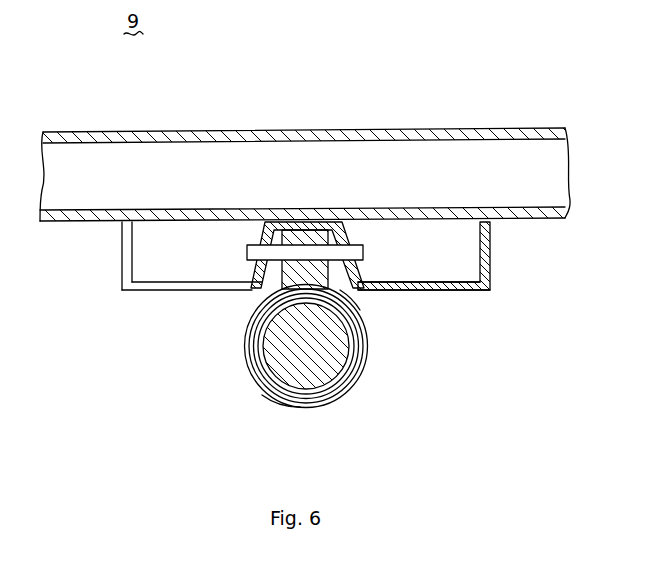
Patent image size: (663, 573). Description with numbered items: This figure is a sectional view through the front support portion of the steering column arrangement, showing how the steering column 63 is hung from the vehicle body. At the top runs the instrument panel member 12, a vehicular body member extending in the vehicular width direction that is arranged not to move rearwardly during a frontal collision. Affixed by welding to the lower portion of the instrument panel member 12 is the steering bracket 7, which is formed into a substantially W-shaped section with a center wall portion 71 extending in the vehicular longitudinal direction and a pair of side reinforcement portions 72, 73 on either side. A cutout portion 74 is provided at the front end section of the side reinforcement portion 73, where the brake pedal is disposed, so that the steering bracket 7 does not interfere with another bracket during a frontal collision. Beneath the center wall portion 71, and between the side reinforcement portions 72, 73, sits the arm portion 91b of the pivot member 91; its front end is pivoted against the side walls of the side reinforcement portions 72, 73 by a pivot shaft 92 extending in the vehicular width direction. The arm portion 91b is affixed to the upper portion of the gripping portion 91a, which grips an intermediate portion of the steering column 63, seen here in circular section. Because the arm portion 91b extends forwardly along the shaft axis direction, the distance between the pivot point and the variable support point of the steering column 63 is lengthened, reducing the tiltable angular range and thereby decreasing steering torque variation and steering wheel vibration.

The instrument panel member 12 is at (441, 129).
The steering bracket 7 is at (492, 250).
The center wall portion 71 is at (305, 223).
The side reinforcement portion 72 is at (456, 291).
The side reinforcement portion 73 is at (122, 255).
The cutout portion 74 is at (180, 291).
The pivot shaft 92 is at (353, 244).
The pivot member 91 is at (245, 358).
The gripping portion 91a is at (283, 404).
The arm portion 91b is at (336, 279).
The steering column 63 is at (352, 380).